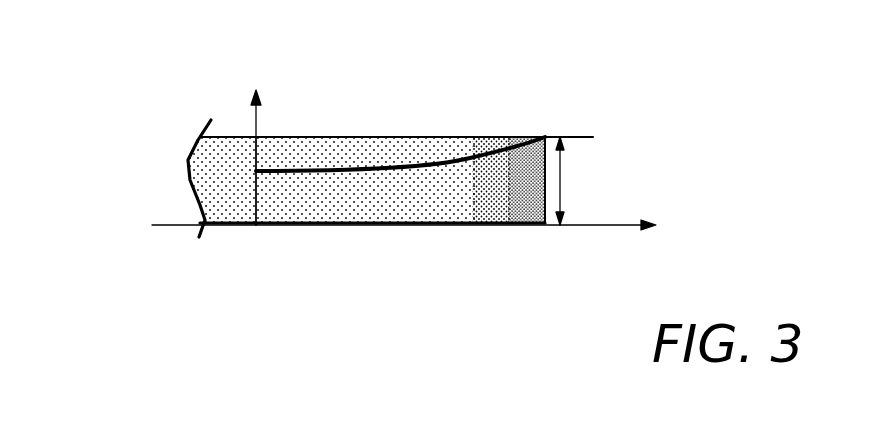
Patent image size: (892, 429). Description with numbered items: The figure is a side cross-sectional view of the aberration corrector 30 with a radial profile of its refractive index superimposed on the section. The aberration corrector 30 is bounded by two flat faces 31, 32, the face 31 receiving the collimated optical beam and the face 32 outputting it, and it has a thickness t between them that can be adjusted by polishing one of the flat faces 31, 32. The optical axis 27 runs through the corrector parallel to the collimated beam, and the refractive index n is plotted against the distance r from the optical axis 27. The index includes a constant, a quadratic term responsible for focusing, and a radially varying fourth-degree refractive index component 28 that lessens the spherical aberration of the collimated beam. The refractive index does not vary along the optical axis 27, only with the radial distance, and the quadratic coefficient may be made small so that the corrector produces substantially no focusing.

The aberration corrector 30 is at (131, 49).
The flat face 31 is at (386, 134).
The flat face 32 is at (382, 227).
The fourth-degree refractive index component 28 is at (437, 167).
The optical axis 27 is at (254, 200).